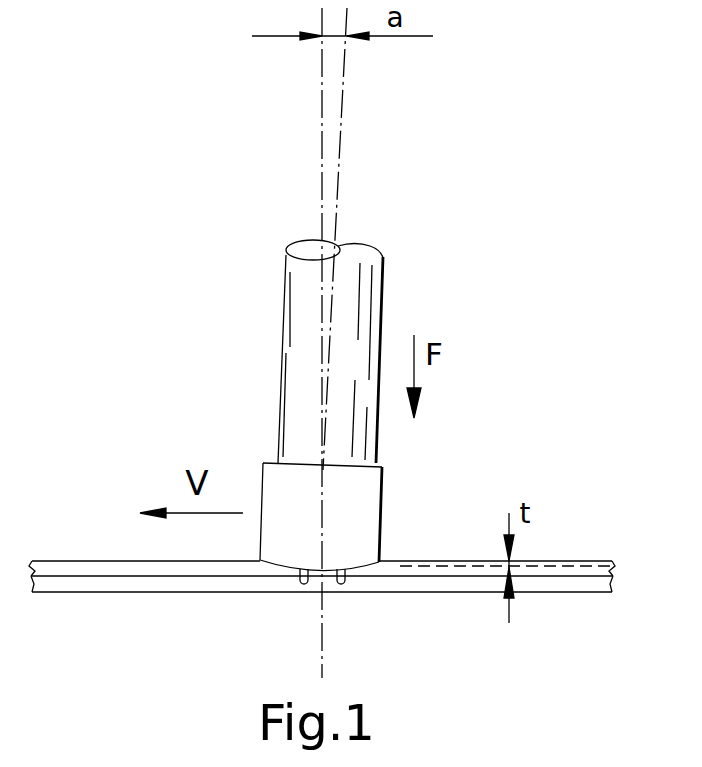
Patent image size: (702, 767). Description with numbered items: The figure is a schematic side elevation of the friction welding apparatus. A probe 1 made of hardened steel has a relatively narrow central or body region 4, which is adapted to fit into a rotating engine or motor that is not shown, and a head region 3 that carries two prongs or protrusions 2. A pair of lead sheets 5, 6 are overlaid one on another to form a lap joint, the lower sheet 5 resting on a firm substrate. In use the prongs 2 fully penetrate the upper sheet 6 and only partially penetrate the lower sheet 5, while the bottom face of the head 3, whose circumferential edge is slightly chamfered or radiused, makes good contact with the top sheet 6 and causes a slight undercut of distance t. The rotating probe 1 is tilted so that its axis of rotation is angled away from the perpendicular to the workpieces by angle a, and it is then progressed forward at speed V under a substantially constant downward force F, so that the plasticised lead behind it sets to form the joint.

The probe 1 is at (280, 387).
The prongs or protrusions 2 is at (302, 583).
The head region 3 is at (367, 570).
The central or body region 4 is at (343, 370).
The lower lead sheet 5 is at (78, 588).
The upper lead sheet 6 is at (73, 567).